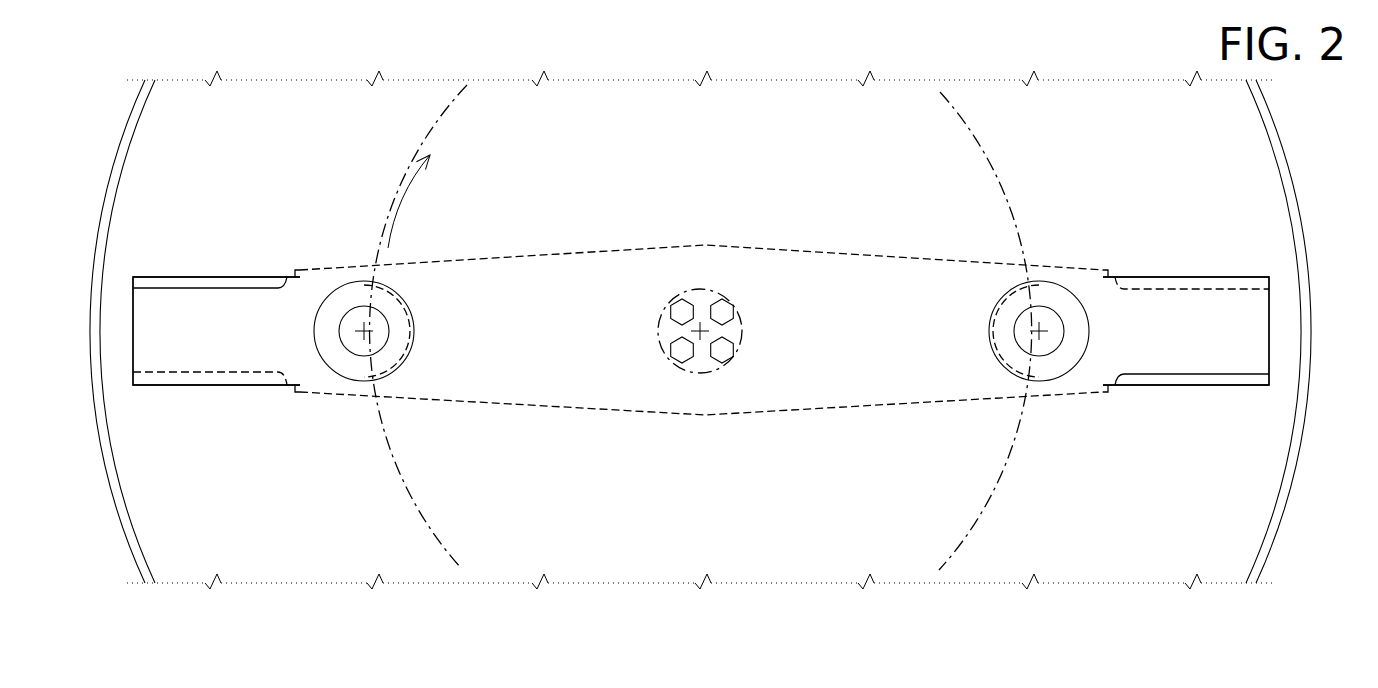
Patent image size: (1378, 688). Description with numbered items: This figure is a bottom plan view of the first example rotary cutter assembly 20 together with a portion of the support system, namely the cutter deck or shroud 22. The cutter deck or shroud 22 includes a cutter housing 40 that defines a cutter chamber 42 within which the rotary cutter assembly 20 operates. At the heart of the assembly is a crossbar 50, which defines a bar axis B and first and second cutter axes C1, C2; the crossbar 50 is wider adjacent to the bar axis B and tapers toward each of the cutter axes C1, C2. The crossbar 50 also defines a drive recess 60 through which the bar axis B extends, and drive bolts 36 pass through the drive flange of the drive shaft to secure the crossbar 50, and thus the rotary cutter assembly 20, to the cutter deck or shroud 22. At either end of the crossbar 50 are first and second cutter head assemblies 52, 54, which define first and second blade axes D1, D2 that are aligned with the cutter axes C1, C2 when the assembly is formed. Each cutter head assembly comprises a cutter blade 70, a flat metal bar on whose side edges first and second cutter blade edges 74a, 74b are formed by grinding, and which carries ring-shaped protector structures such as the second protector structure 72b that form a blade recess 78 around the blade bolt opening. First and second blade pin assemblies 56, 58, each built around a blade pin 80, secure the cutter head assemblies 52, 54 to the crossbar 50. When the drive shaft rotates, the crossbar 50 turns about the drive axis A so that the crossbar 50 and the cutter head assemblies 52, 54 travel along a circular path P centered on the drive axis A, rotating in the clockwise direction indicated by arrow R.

The rotary cutter assembly 20 is at (1134, 206).
The cutter deck or shroud 22 is at (1268, 97).
The cutter housing 40 is at (1275, 128).
The cutter chamber 42 is at (721, 195).
The crossbar 50 is at (829, 264).
The first cutter head assembly 52 is at (216, 413).
The second cutter head assembly 54 is at (1140, 410).
The first blade pin assembly 56 is at (340, 340).
The second blade pin assembly 58 is at (1065, 338).
The drive recess 60 is at (693, 366).
The drive bolts 36 is at (682, 350).
The cutter blade 70 is at (221, 303).
The second protector structure 72b is at (405, 328).
The first cutter blade edge 74a is at (184, 386).
The second cutter blade edge 74b is at (177, 277).
The blade recess 78 is at (387, 343).
The blade pin 80 is at (377, 373).
The drive axis A is at (742, 300).
The bar axis B is at (701, 331).
The first cutter axis C1 is at (387, 316).
The first blade axis D1 is at (387, 316).
The second cutter axis C2 is at (1021, 316).
The second blade axis D2 is at (1021, 316).
The circular path P is at (437, 543).
The arrow R is at (402, 207).